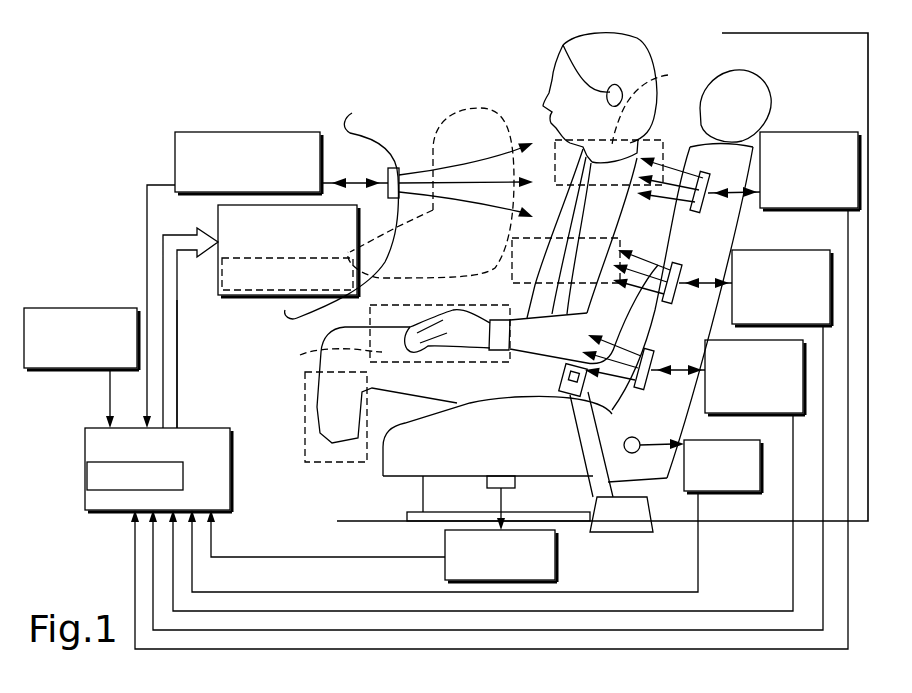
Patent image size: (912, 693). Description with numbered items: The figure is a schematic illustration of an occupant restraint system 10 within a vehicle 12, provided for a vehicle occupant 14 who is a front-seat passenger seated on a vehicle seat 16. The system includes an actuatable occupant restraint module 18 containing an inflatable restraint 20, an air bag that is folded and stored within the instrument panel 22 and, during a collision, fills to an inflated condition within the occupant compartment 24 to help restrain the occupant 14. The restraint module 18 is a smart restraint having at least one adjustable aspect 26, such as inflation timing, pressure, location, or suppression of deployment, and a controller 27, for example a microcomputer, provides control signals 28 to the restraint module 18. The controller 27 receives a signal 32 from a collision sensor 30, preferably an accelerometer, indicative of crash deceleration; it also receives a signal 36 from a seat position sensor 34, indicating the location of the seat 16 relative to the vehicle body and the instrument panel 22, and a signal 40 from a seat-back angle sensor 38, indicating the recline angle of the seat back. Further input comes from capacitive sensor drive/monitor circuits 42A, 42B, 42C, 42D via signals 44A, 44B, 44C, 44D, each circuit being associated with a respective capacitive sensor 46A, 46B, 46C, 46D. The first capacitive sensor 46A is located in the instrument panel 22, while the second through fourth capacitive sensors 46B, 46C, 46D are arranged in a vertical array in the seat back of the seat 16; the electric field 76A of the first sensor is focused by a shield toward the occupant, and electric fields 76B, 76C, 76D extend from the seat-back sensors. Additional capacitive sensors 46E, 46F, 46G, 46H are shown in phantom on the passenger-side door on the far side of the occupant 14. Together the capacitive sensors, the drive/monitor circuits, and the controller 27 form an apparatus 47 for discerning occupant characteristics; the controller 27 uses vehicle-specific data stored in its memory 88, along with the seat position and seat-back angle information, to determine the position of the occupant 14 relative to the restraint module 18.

The occupant restraint system 10 is at (117, 98).
The apparatus for discerning occupant characteristics 47 is at (465, 277).
The capacitive sensor drive/monitor circuit 42A is at (237, 132).
The signal 44A is at (147, 210).
The actuatable occupant restraint module 18 is at (218, 214).
The adjustable aspect 26 is at (218, 283).
The control signals 28 is at (178, 351).
The collision sensor 30 is at (75, 308).
The signal 32 is at (110, 390).
The controller 27 is at (175, 446).
The memory 88 is at (87, 478).
The instrument panel 22 is at (362, 143).
The first capacitive sensor 46A is at (388, 172).
The inflatable restraint 20 is at (437, 123).
The occupant compartment 24 is at (545, 106).
The electric field 76A is at (500, 210).
The vehicle occupant 14 is at (633, 52).
The capacitive sensor 46E is at (661, 105).
The vehicle seat 16 is at (700, 150).
The capacitive sensor drive/monitor circuit 42B is at (851, 132).
The second capacitive sensor 46B is at (698, 212).
The electric field 76B is at (658, 200).
The electric field 76C is at (655, 262).
The capacitive sensor drive/monitor circuit 42C is at (822, 250).
The third capacitive sensor 46C is at (670, 303).
The capacitive sensor 46F is at (520, 285).
The capacitive sensor 46G is at (322, 357).
The electric field 76D is at (613, 347).
The capacitive sensor drive/monitor circuit 42D is at (735, 413).
The fourth capacitive sensor 46D is at (644, 389).
The capacitive sensor 46H is at (300, 443).
The vehicle 12 is at (352, 520).
The seat position sensor 34 is at (558, 552).
The signal 36 is at (245, 557).
The seat-back angle sensor 38 is at (727, 493).
The signal 40 is at (698, 553).
The signal 44B is at (848, 550).
The signal 44C is at (823, 567).
The signal 44D is at (793, 585).